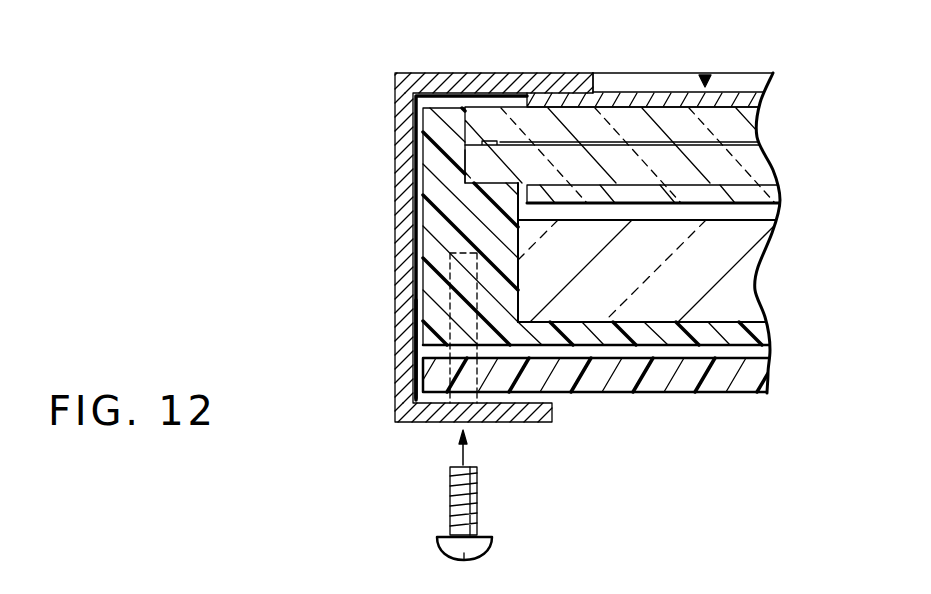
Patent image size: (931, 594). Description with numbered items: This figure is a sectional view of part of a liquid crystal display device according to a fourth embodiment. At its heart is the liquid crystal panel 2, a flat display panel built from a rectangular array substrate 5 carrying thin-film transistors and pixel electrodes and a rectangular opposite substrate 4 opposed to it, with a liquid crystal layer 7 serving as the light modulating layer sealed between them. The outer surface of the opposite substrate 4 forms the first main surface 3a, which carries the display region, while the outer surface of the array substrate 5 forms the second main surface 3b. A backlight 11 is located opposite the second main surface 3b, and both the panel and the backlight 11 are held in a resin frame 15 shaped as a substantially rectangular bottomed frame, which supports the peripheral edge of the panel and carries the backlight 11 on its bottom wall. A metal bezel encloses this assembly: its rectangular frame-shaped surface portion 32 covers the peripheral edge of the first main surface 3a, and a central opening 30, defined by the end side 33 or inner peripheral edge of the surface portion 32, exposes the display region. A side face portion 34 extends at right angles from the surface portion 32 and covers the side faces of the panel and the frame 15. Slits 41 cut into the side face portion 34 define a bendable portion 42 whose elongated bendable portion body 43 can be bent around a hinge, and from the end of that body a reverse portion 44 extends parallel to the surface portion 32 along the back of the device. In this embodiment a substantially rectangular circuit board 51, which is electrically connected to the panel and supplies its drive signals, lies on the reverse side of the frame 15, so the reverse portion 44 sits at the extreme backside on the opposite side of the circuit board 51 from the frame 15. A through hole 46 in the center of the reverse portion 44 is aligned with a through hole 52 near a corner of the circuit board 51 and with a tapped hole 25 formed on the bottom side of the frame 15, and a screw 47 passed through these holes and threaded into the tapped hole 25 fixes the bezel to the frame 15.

The liquid crystal panel 2 is at (705, 75).
The first main surface 3a is at (747, 95).
The second main surface 3b is at (720, 200).
The opposite substrate 4 is at (750, 122).
The array substrate 5 is at (775, 172).
The liquid crystal layer 7 is at (762, 141).
The backlight 11 is at (648, 308).
The frame 15 is at (747, 313).
The tapped hole 25 is at (414, 337).
The opening 30 is at (650, 82).
The surface portion 32 is at (422, 73).
The end side 33 is at (598, 73).
The side face portion 34 is at (395, 128).
The slit 41 is at (410, 202).
The bendable portion 42 is at (397, 303).
The bendable portion body 43 is at (397, 262).
The reverse portion 44 is at (418, 421).
The through hole 46 is at (455, 415).
The screw 47 is at (490, 545).
The circuit board 51 is at (713, 380).
The through hole 52 is at (483, 410).